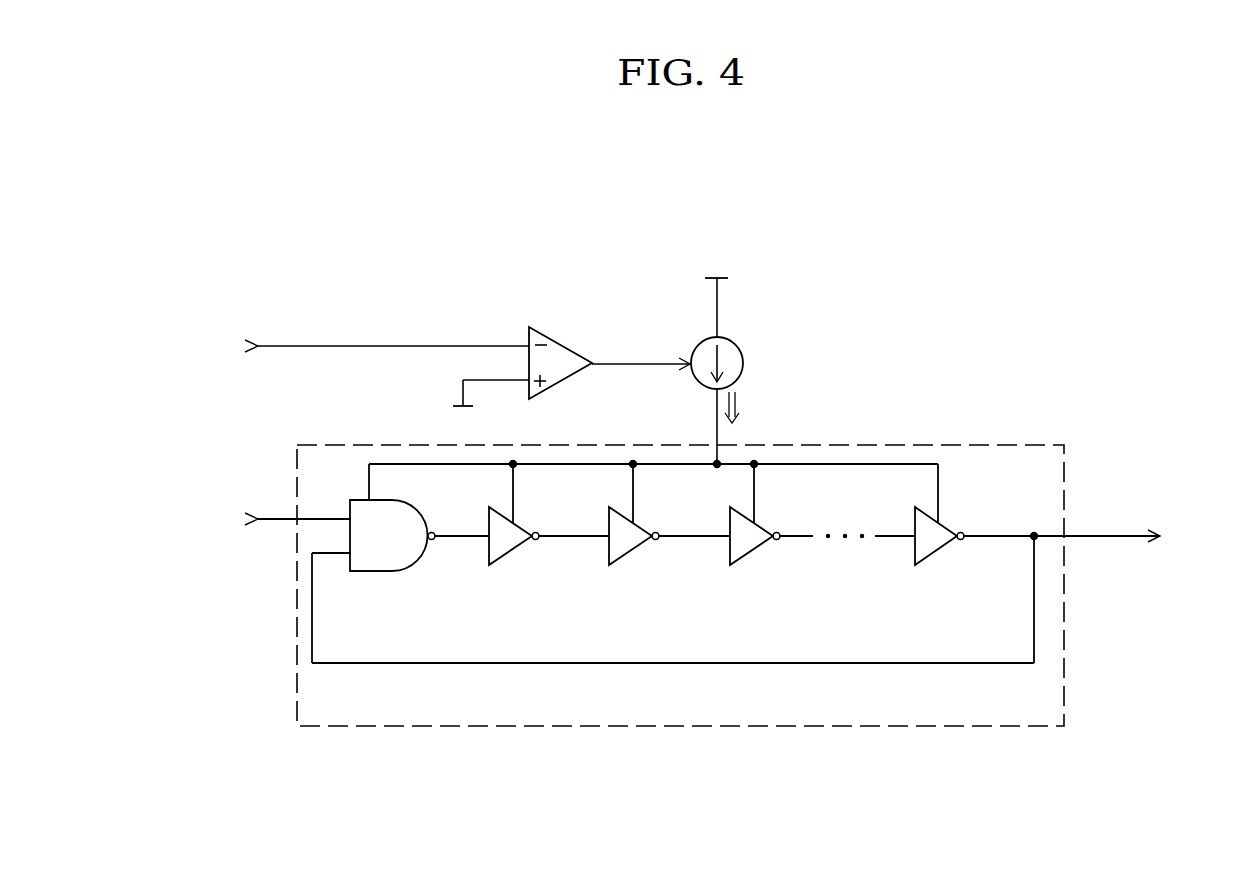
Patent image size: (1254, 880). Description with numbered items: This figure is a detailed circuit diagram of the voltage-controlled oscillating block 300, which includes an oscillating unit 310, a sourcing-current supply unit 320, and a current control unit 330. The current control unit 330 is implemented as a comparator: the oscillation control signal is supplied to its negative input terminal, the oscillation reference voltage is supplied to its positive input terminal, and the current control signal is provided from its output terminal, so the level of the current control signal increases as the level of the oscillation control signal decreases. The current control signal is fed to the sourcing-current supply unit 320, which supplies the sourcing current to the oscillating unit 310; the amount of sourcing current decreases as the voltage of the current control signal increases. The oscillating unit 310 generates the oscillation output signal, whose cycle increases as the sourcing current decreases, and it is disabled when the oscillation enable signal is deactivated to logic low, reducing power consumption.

The voltage-controlled oscillating block 300 is at (1037, 304).
The oscillating unit 310 is at (912, 445).
The sourcing-current supply unit 320 is at (742, 352).
The current control unit 330 is at (558, 340).